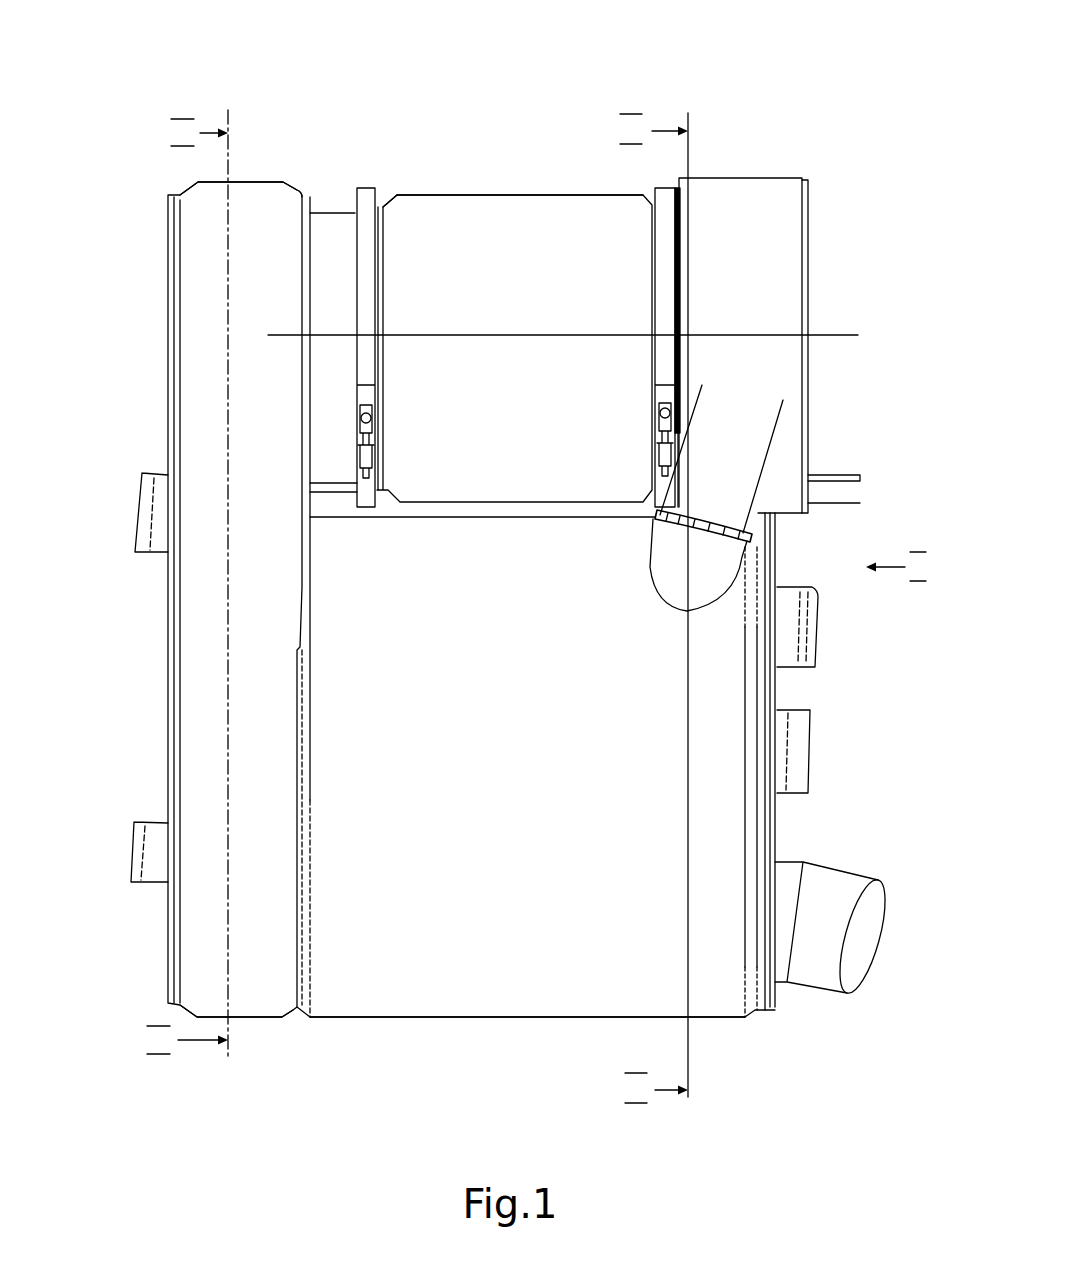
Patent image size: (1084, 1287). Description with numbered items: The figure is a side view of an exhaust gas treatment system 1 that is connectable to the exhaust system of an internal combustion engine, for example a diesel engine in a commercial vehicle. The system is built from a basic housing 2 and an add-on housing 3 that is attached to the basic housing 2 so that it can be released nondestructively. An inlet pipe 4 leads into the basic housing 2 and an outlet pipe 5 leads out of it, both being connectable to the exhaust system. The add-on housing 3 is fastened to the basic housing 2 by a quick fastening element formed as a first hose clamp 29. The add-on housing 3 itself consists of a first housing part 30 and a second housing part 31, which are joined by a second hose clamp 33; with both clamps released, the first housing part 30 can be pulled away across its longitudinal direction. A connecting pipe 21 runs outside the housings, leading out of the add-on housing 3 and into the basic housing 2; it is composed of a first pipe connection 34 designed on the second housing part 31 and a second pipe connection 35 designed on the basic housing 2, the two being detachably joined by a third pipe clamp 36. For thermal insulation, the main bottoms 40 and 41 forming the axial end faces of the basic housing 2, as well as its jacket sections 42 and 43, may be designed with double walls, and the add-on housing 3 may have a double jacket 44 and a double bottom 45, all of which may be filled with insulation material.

The exhaust gas treatment system 1 is at (760, 126).
The basic housing 2 is at (422, 1026).
The add-on housing 3 is at (497, 186).
The inlet pipe 4 is at (757, 685).
The outlet pipe 5 is at (860, 955).
The connecting pipe 21 is at (756, 456).
The first hose clamp 29 is at (367, 188).
The first housing part 30 is at (525, 210).
The second housing part 31 is at (760, 212).
The second hose clamp 33 is at (667, 262).
The first pipe connection 34 is at (727, 497).
The second pipe connection 35 is at (678, 593).
The third pipe clamp 36 is at (655, 517).
The main bottom 40 is at (168, 628).
The main bottom 41 is at (768, 838).
The jacket section 42 is at (548, 1018).
The jacket section 43 is at (238, 182).
The double jacket 44 is at (442, 188).
The double bottom 45 is at (802, 272).